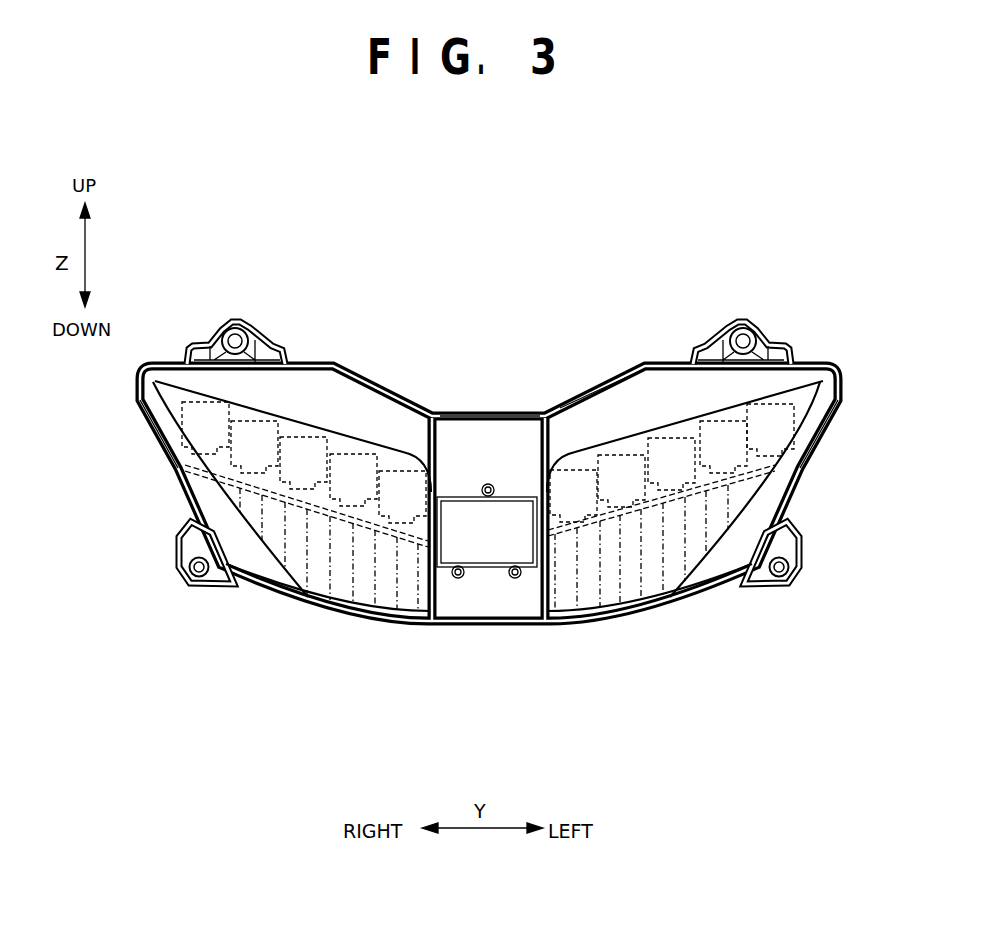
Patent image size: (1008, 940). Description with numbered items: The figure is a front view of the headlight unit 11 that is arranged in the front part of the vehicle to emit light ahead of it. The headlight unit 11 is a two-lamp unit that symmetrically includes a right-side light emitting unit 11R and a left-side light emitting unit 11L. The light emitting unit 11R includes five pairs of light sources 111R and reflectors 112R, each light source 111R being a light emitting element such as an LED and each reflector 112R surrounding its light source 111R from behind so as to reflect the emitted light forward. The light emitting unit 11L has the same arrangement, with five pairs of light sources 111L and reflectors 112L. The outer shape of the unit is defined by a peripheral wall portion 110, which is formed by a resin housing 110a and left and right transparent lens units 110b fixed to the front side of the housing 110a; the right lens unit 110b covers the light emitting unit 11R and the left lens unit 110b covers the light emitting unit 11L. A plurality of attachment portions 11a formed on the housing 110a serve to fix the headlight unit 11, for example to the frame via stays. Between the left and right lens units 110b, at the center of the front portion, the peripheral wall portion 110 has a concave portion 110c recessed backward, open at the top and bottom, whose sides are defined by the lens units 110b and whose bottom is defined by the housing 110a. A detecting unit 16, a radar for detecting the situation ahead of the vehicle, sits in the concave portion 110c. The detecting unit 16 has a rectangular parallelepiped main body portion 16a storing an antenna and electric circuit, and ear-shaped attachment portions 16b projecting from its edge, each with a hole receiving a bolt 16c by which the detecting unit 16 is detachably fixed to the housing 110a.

The headlight unit 11 is at (471, 511).
The right-side light emitting unit 11R is at (254, 454).
The left-side light emitting unit 11L is at (706, 450).
The attachment portion 11a is at (235, 321).
The peripheral wall portion 110 is at (493, 505).
The housing 110a is at (575, 400).
The lens unit 110b is at (804, 362).
The concave portion 110c is at (452, 430).
The light source 111R is at (187, 460).
The light source 111L is at (780, 452).
The reflector 112R is at (353, 457).
The reflector 112L is at (620, 448).
The detecting unit 16 is at (493, 529).
The main body portion 16a is at (519, 497).
The attachment portion 16b is at (487, 484).
The bolt 16c is at (490, 484).